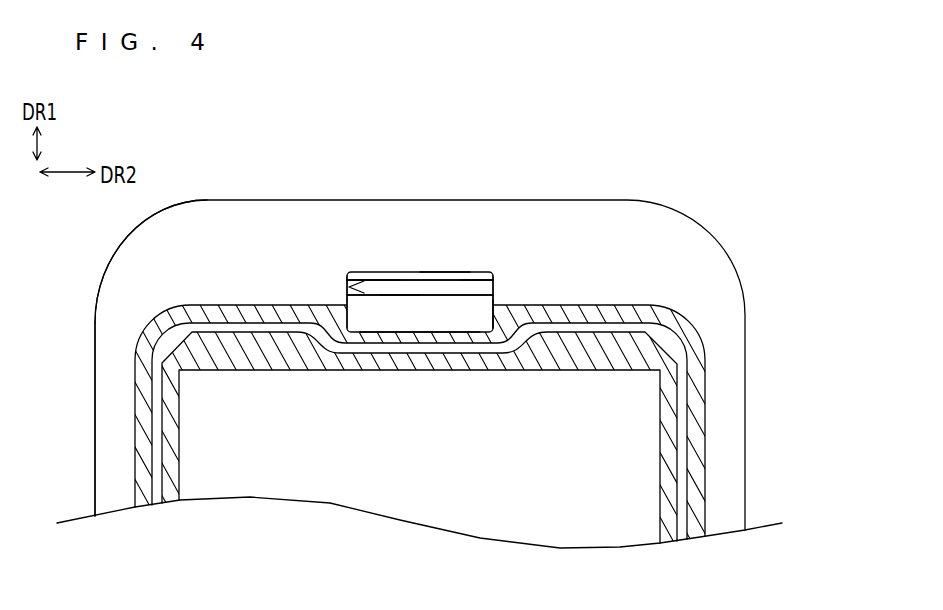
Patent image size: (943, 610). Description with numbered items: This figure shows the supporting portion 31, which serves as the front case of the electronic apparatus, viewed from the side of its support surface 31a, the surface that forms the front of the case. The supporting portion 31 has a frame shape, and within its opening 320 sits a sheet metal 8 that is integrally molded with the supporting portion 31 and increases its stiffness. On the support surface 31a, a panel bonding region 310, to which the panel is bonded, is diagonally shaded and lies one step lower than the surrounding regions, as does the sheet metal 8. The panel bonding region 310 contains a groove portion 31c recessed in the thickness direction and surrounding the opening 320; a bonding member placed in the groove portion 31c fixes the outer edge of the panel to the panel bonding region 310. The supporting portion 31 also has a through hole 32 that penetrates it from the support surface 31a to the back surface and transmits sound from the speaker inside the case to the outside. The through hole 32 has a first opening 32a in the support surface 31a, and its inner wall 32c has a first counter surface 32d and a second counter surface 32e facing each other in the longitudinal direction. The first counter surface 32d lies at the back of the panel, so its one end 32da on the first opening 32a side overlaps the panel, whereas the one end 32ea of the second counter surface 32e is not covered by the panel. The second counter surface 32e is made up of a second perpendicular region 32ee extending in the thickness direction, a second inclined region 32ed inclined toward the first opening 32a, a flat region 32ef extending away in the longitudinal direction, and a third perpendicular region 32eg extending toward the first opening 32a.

The sheet metal 8 is at (647, 475).
The supporting portion 31 is at (678, 228).
The support surface 31a is at (118, 275).
The groove portion 31c is at (158, 463).
The panel bonding region 310 is at (210, 305).
The opening 320 is at (656, 428).
The through hole 32 is at (348, 272).
The first opening 32a is at (493, 300).
The inner wall 32c is at (352, 318).
The first counter surface 32d is at (463, 320).
The one end of the first counter surface 32da is at (412, 334).
The second counter surface 32e is at (530, 142).
The one end of the second counter surface 32ea is at (347, 274).
The second perpendicular region 32ee is at (370, 287).
The second inclined region 32ed is at (393, 290).
The flat region 32ef is at (443, 277).
The third perpendicular region 32eg is at (478, 275).